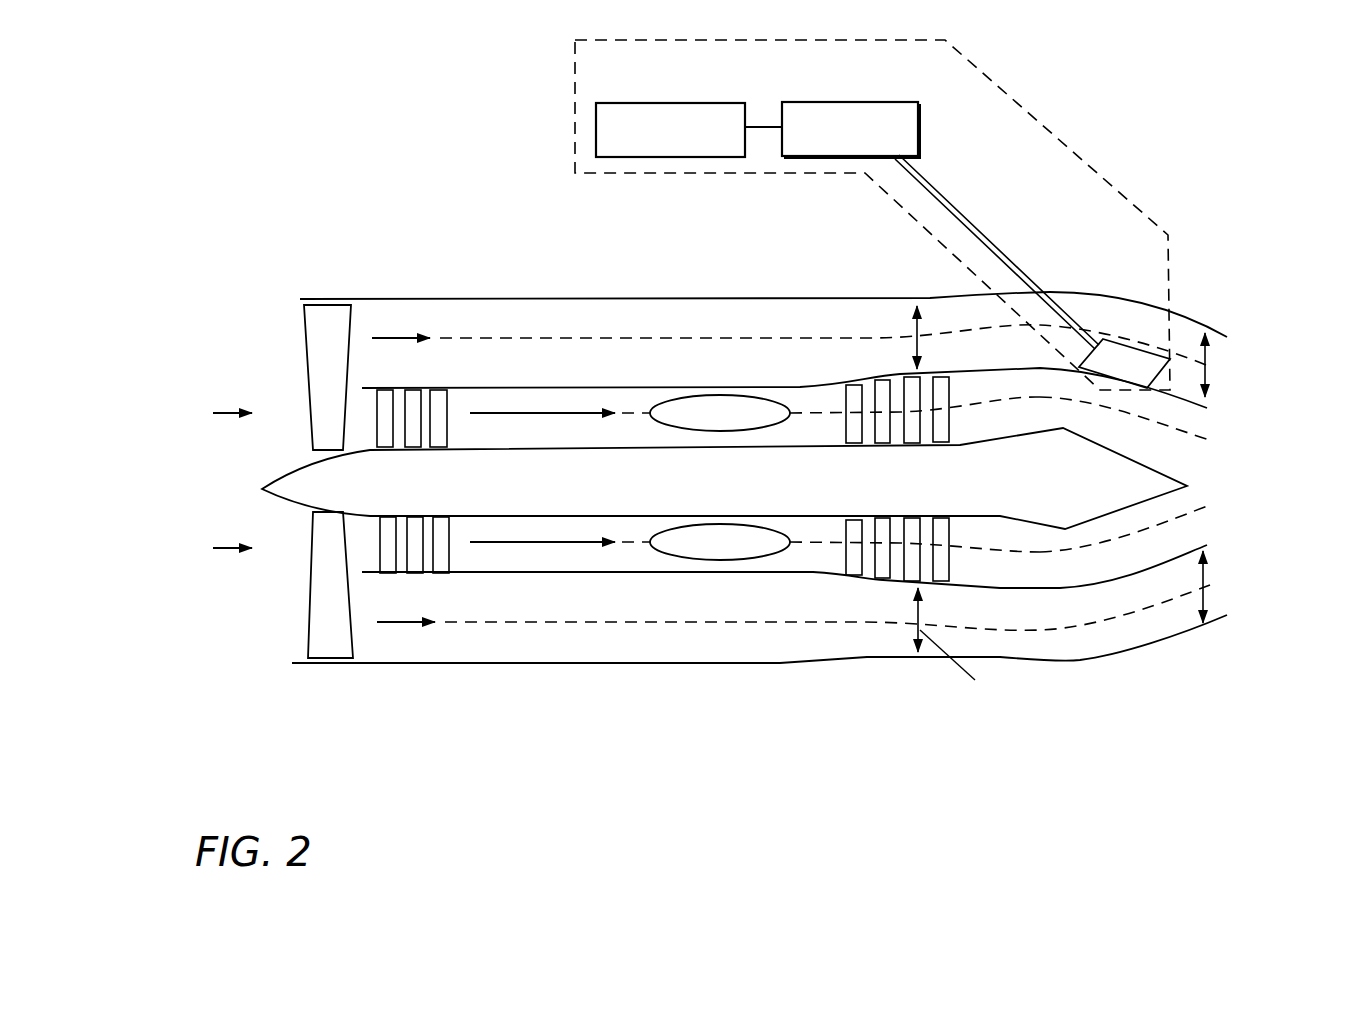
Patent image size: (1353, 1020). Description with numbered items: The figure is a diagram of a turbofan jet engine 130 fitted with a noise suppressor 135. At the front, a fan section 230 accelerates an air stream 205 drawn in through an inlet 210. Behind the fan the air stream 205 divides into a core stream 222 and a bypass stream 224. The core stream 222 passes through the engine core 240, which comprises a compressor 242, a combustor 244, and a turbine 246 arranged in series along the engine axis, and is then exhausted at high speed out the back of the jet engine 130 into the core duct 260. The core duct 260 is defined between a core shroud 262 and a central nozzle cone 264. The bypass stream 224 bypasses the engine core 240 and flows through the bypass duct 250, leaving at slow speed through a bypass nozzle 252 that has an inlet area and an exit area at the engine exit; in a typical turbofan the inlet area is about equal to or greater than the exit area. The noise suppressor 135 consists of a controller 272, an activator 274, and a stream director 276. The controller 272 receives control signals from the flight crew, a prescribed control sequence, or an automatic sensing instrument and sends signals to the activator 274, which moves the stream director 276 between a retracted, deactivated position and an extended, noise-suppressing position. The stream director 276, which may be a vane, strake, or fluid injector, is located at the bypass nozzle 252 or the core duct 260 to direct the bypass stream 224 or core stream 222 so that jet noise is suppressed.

The jet engine 130 is at (1088, 100).
The noise suppressor 135 is at (872, 215).
The air stream 205 is at (216, 483).
The inlet 210 is at (190, 480).
The core stream 222 is at (754, 483).
The bypass stream 224 is at (792, 477).
The fan section 230 is at (292, 325).
The engine core 240 is at (663, 605).
The compressor 242 is at (420, 573).
The combustor 244 is at (711, 560).
The turbine 246 is at (866, 581).
The bypass duct 250 is at (757, 355).
The bypass nozzle 252 is at (1013, 343).
The core duct 260 is at (1103, 437).
The core shroud 262 is at (1185, 400).
The nozzle cone 264 is at (1198, 487).
The controller 272 is at (700, 110).
The activator 274 is at (873, 110).
The stream director 276 is at (1112, 335).